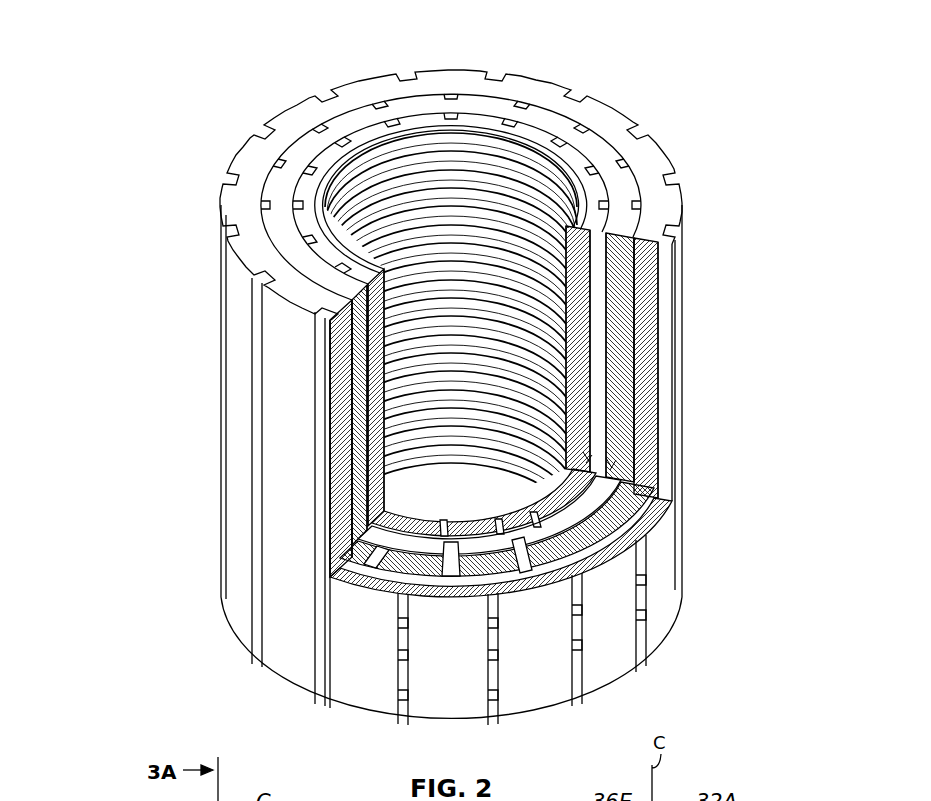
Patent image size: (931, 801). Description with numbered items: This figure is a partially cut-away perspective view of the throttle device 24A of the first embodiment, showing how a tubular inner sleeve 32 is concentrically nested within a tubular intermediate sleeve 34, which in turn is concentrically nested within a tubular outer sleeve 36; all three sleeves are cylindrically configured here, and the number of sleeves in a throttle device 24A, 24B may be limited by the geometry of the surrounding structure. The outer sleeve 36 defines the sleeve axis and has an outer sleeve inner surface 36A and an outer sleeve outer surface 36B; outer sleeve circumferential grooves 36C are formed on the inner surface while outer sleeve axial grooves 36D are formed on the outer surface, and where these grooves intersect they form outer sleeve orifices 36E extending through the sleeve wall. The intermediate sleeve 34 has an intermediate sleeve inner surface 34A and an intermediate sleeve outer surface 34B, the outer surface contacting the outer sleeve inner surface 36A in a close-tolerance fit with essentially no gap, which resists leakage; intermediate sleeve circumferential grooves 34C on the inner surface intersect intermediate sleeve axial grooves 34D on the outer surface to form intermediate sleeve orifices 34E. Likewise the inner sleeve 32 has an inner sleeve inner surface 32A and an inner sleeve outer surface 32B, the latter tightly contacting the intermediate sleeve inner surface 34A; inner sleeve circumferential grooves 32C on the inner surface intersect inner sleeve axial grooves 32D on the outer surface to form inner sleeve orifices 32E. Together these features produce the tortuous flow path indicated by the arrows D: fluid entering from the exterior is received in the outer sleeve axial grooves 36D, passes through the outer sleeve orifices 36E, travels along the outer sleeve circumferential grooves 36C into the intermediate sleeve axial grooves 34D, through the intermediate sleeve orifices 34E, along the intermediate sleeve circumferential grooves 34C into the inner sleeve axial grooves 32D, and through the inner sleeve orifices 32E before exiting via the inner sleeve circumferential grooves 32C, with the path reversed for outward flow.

The throttle device 24A is at (176, 96).
The throttle device 24B is at (104, 792).
The tubular inner sleeve 32 is at (617, 213).
The inner sleeve inner surface 32A is at (480, 153).
The inner sleeve outer surface 32B is at (357, 587).
The inner sleeve circumferential grooves 32C is at (503, 170).
The inner sleeve axial grooves 32D is at (472, 117).
The inner sleeve orifices 32E is at (650, 457).
The tubular intermediate sleeve 34 is at (587, 187).
The intermediate sleeve inner surface 34A is at (268, 272).
The intermediate sleeve outer surface 34B is at (330, 567).
The intermediate sleeve circumferential grooves 34C is at (633, 363).
The intermediate sleeve axial grooves 34D is at (378, 105).
The intermediate sleeve orifices 34E is at (660, 500).
The tubular outer sleeve 36 is at (603, 115).
The outer sleeve inner surface 36A is at (243, 220).
The outer sleeve outer surface 36B is at (270, 527).
The outer sleeve circumferential grooves 36C is at (660, 290).
The outer sleeve axial grooves 36D is at (222, 187).
The outer sleeve orifices 36E is at (640, 530).
The tortuous flow path D is at (657, 480).